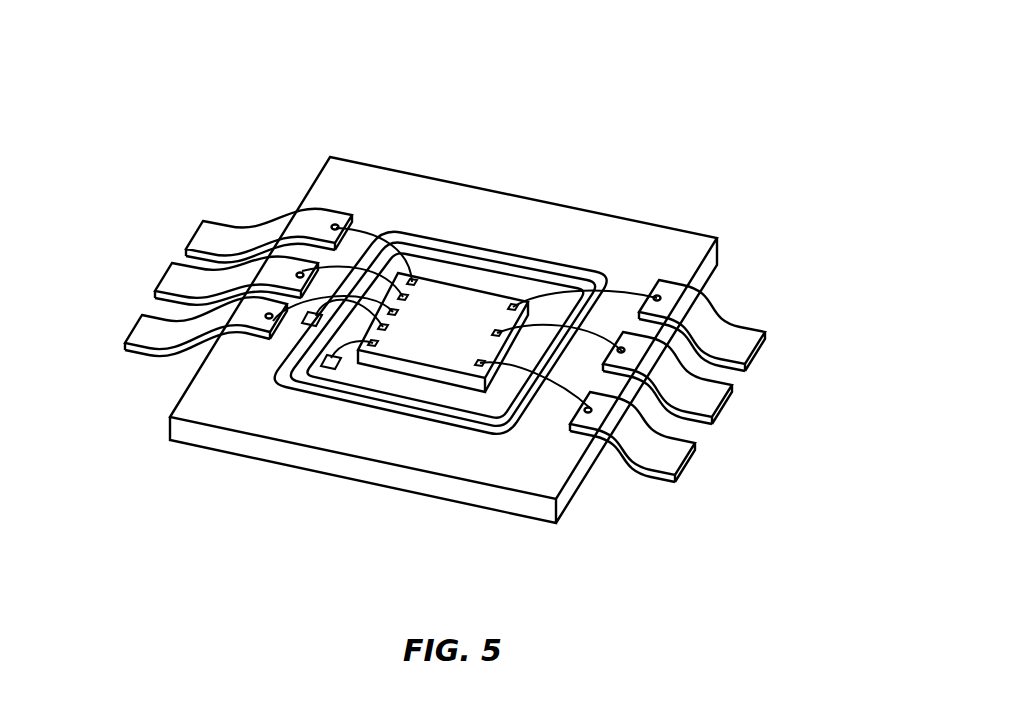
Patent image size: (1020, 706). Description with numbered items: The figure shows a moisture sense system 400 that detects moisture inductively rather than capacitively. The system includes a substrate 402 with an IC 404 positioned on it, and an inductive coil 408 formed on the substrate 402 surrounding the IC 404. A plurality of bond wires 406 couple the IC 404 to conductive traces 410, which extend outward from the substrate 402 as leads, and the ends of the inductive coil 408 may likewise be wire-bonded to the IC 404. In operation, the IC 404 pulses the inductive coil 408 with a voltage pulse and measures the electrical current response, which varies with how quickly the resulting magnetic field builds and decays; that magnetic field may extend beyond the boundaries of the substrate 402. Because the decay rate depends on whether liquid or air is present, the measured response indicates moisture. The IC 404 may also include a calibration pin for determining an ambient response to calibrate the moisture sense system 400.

The moisture sense system 400 is at (716, 62).
The substrate 402 is at (667, 240).
The IC 404 is at (462, 300).
The bond wires 406 is at (357, 228).
The inductive coil 408 is at (572, 262).
The conductive traces 410 is at (213, 233).